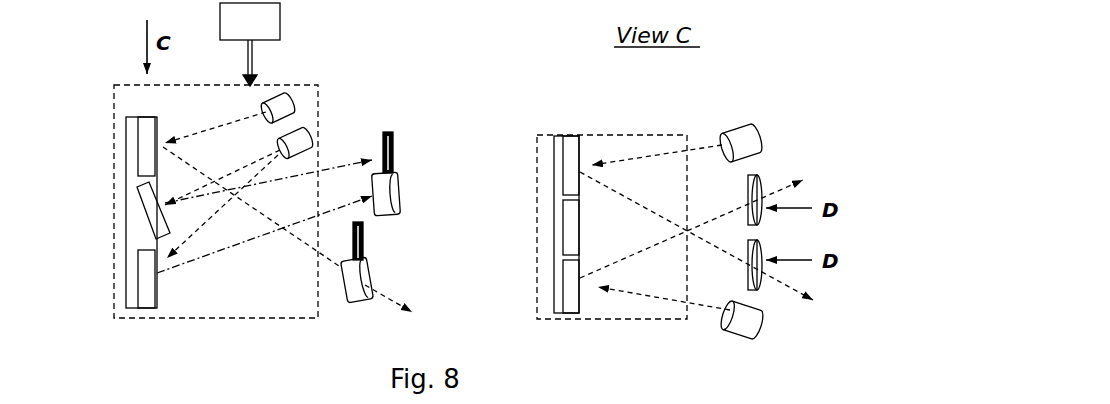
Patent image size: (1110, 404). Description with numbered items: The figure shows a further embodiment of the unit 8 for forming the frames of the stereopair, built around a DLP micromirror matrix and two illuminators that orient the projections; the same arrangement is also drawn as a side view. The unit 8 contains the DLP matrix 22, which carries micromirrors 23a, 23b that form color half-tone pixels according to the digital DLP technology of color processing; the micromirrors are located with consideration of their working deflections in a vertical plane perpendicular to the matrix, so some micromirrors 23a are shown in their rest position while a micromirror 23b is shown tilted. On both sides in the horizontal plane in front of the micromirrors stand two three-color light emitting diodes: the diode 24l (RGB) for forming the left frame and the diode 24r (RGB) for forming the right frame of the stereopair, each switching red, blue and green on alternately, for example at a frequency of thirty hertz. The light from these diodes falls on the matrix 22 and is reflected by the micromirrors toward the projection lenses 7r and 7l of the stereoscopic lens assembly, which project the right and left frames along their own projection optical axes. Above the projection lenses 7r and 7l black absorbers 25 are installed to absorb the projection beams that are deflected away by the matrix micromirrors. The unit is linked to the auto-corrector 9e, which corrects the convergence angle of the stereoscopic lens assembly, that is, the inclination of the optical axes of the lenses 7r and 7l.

The projection unit for forming the stereopair frames 8 is at (210, 317).
The auto-corrector for convergence angle 9e is at (250, 44).
The DLP matrix 22 is at (131, 145).
The micromirrors 23a is at (148, 130).
The micromirrors 23b is at (155, 220).
The three-color light emitting diode (RGB) for the left frame 24l is at (292, 105).
The three-color light emitting diode (RGB) for the right frame 24r is at (302, 140).
The right projection lens 7r is at (397, 192).
The left projection lens 7l is at (355, 305).
The light stops 25 is at (393, 165).